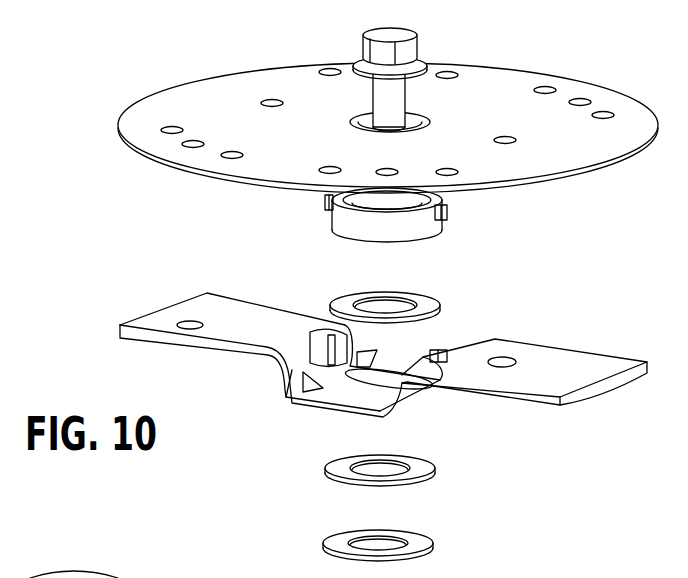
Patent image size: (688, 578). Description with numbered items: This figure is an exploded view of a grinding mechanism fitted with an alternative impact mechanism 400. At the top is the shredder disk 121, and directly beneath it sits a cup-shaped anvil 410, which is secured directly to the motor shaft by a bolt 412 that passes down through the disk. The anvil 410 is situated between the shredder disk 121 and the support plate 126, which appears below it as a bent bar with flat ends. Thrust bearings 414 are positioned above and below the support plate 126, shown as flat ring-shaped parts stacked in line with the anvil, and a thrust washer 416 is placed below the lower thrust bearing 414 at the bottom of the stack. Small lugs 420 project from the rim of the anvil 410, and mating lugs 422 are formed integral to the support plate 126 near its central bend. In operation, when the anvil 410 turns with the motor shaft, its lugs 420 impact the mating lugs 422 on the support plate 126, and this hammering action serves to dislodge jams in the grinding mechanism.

The shredder disk 121 is at (135, 118).
The support plate 126 is at (165, 315).
The impact mechanism 400 is at (203, 228).
The cup-shaped anvil 410 is at (400, 240).
The bolt 412 is at (373, 50).
The thrust bearings 414 is at (340, 300).
The thrust washer 416 is at (430, 541).
The lugs 420 is at (328, 213).
The mating lugs 422 is at (440, 352).